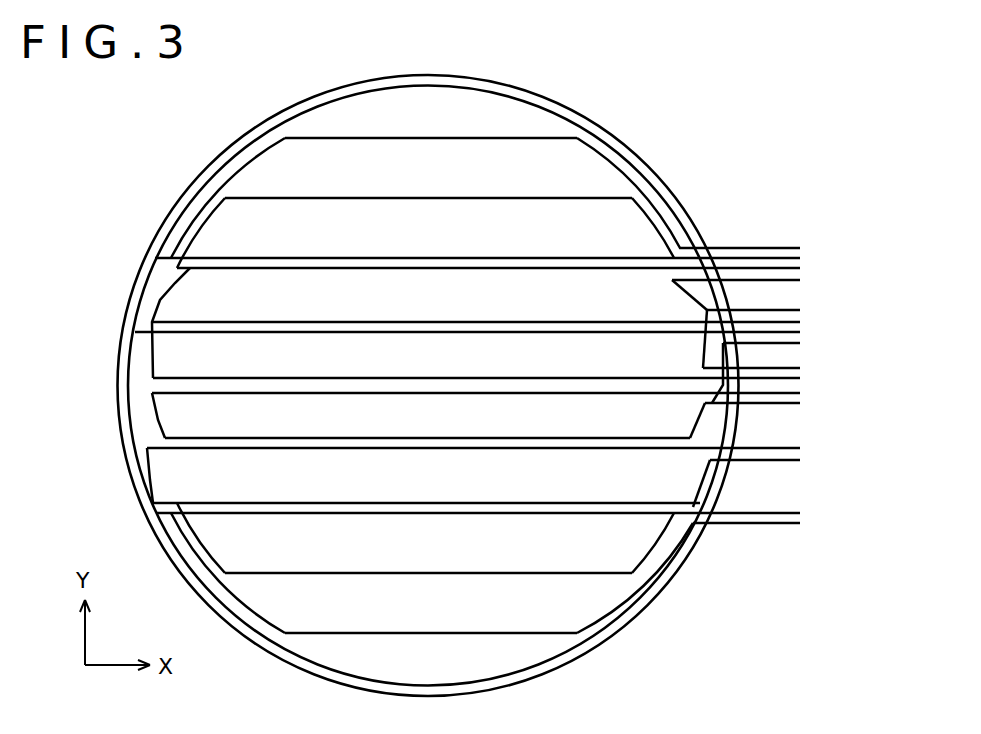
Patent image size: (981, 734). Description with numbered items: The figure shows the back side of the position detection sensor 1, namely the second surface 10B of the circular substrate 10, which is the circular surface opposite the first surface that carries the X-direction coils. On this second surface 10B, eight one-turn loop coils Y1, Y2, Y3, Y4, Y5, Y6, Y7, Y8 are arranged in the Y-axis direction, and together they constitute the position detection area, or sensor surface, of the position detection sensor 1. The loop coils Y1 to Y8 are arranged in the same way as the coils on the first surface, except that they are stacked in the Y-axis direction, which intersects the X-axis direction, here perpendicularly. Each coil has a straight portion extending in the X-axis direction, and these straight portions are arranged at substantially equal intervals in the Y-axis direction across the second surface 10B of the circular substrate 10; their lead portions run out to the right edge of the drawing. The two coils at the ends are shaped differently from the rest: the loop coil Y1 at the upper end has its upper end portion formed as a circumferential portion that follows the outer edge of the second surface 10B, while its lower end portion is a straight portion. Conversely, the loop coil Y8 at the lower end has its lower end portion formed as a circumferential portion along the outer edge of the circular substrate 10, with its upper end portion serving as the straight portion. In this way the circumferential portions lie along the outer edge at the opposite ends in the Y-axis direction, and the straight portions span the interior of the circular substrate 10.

The position detection sensor 1 is at (744, 184).
The circular substrate 10 is at (117, 384).
The second surface 10B is at (133, 293).
The loop coil Y1 is at (800, 254).
The loop coil Y2 is at (800, 274).
The loop coil Y3 is at (800, 316).
The loop coil Y4 is at (800, 338).
The loop coil Y5 is at (800, 373).
The loop coil Y6 is at (800, 400).
The loop coil Y7 is at (800, 457).
The loop coil Y8 is at (800, 520).